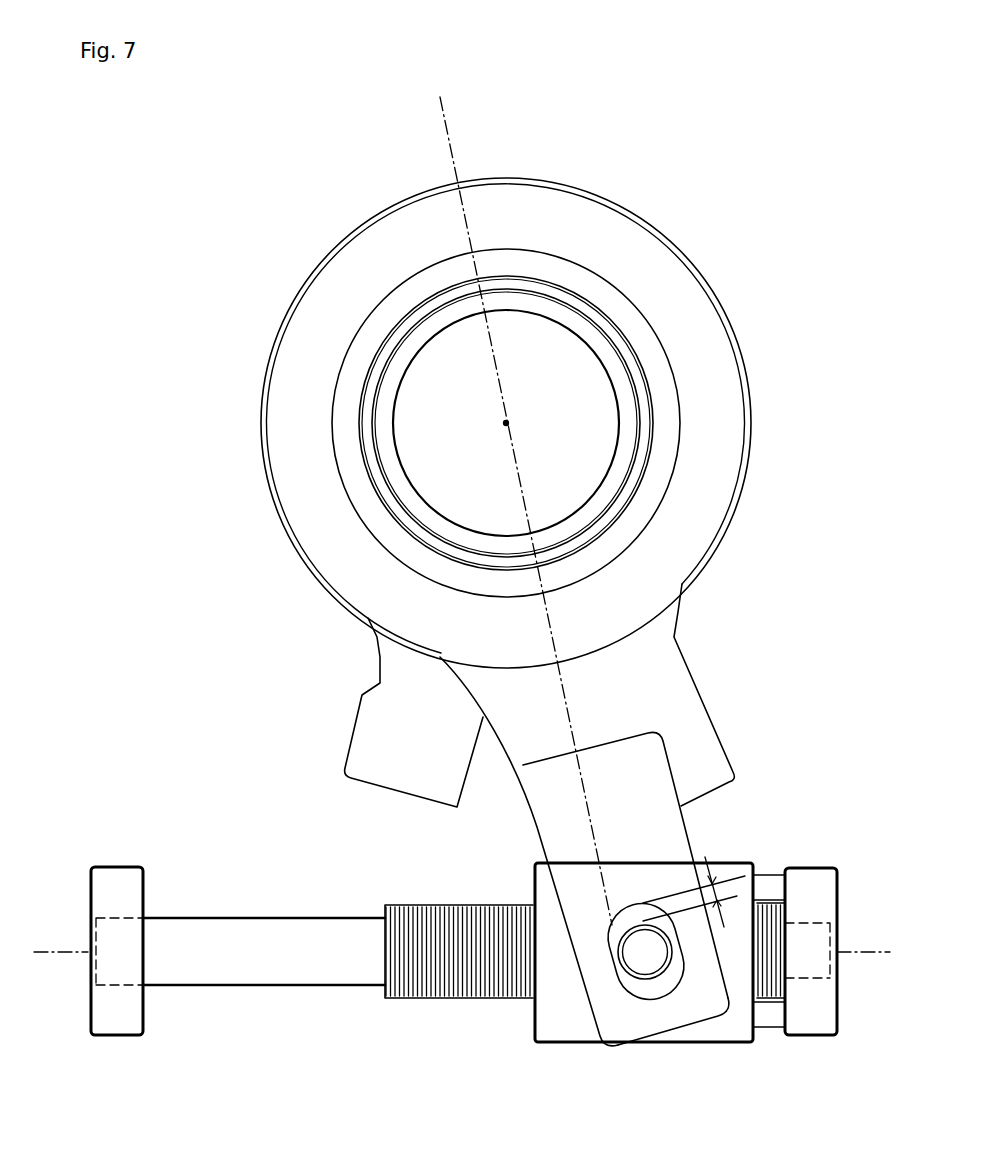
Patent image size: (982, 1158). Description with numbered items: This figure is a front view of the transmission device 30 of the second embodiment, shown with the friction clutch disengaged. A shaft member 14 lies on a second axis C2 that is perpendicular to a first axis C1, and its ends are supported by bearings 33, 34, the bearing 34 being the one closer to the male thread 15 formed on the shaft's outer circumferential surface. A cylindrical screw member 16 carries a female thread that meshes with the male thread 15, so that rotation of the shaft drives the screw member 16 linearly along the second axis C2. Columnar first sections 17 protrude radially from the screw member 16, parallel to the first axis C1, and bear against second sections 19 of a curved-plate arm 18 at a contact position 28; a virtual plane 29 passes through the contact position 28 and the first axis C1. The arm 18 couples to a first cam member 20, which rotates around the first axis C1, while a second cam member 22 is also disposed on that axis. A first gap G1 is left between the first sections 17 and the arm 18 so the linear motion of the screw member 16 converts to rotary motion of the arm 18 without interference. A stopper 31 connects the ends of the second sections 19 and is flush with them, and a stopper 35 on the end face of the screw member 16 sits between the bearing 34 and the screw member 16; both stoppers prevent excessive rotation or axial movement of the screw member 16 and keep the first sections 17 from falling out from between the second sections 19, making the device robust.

The transmission device 30 is at (762, 104).
The first cam member 20 is at (296, 343).
The first axis C1 is at (510, 420).
The virtual plane 29 is at (445, 112).
The second cam member 22 is at (373, 738).
The arm 18 is at (645, 848).
The first sections 17 is at (624, 1026).
The stopper 31 is at (658, 1030).
The contact position 28 is at (610, 960).
The second sections 19 is at (643, 958).
The first gap G1 is at (718, 897).
The screw member 16 is at (543, 887).
The male thread 15 is at (450, 897).
The shaft member 14 is at (213, 932).
The bearing 33 is at (116, 1020).
The second axis C2 is at (45, 945).
The stopper 35 is at (770, 1022).
The bearing 34 is at (823, 1025).